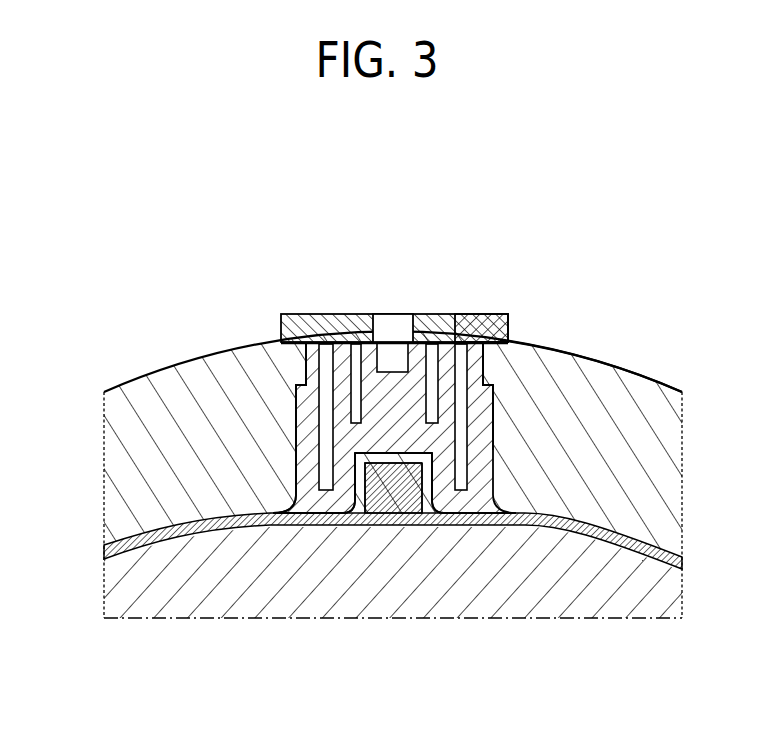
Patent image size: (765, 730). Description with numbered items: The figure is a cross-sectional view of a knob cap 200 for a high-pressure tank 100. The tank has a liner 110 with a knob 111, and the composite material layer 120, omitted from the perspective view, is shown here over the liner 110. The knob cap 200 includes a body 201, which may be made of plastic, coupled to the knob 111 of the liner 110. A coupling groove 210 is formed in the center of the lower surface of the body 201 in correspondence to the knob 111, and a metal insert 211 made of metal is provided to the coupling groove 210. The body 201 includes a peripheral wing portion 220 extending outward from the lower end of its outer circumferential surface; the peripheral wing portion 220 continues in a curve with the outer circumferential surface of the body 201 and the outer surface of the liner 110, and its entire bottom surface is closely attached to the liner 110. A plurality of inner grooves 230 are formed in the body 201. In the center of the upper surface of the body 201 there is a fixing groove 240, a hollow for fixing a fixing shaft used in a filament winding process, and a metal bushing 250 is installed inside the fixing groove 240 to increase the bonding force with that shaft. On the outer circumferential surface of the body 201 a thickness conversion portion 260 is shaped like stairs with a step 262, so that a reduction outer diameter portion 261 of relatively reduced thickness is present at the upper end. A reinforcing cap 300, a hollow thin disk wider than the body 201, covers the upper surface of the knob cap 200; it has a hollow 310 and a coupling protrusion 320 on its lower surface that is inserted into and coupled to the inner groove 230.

The high-pressure tank 100 is at (163, 626).
The liner 110 is at (166, 547).
The knob 111 is at (387, 525).
The composite material layer 120 is at (158, 383).
The knob cap 200 is at (281, 449).
The body 201 is at (608, 400).
The coupling groove 210 is at (455, 502).
The metal insert 211 is at (337, 502).
The peripheral wing portion 220 is at (284, 511).
The inner groove 230 is at (292, 410).
The fixing groove 240 is at (432, 348).
The metal bushing 250 is at (356, 348).
The thickness conversion portion 260 is at (637, 262).
The reduction outer diameter portion 261 is at (483, 383).
The step 262 is at (485, 424).
The reinforcing cap 300 is at (298, 304).
The hollow 310 is at (393, 328).
The coupling protrusion 320 is at (486, 313).